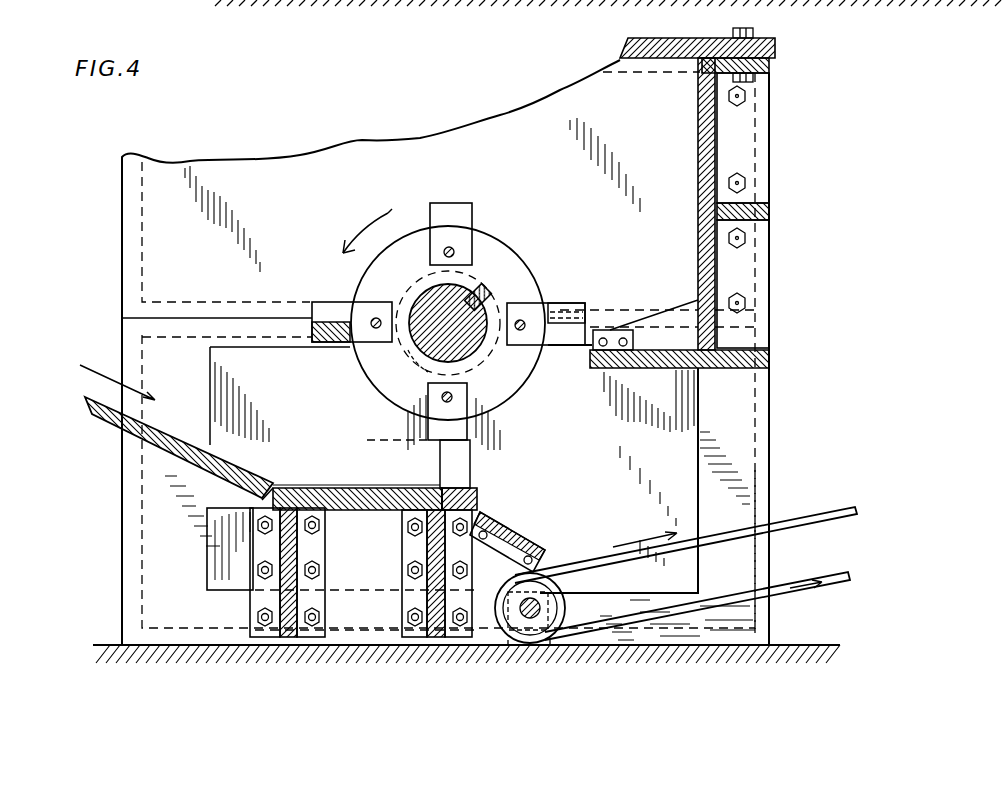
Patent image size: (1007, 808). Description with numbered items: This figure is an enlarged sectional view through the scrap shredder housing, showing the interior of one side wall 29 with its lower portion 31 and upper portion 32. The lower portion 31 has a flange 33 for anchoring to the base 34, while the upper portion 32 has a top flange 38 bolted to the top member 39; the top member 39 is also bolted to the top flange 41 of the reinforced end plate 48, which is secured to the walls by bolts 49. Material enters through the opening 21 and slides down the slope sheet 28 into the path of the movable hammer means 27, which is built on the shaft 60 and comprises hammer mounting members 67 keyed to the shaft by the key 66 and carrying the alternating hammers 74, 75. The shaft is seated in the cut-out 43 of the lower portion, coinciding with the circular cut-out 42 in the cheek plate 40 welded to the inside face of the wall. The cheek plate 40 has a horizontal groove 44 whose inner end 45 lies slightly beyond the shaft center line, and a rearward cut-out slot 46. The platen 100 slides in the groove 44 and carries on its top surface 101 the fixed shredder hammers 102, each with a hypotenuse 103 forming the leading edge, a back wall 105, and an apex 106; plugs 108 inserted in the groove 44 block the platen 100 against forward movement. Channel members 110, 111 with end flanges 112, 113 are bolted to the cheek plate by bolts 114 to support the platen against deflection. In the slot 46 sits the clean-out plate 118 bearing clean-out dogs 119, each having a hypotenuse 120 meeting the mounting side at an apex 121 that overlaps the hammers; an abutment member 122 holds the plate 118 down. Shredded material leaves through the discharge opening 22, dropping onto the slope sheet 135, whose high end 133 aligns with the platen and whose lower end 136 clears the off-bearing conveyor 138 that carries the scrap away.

The opening 21 is at (122, 322).
The discharge opening 22 is at (770, 388).
The movable hammer means 27 is at (517, 236).
The slope sheet 28 is at (110, 428).
The side wall 29 is at (735, 506).
The lower portion 31 is at (740, 562).
The upper portion 32 is at (655, 85).
The flange 33 is at (690, 644).
The base 34 is at (800, 652).
The top flange 38 is at (640, 70).
The top member 39 is at (626, 50).
The cheek plate 40 is at (680, 420).
The top flange 41 is at (775, 66).
The circular cut-out 42 is at (425, 357).
The cut-out 43 is at (430, 368).
The groove 44 is at (262, 505).
The inner end 45 is at (478, 500).
The cut-out slot 46 is at (625, 368).
The end plate 48 is at (718, 153).
The bolts 49 is at (745, 240).
The shaft 60 is at (430, 292).
The key 66 is at (490, 288).
The hammer mounting member 67 is at (535, 300).
The hammer 74 is at (572, 295).
The hammer 75 is at (470, 212).
The platen 100 is at (390, 508).
The top surface 101 is at (298, 484).
The fixed shredder hammer 102 is at (395, 478).
The hypotenuse 103 is at (426, 440).
The back wall 105 is at (472, 460).
The apex 106 is at (470, 432).
The plug 108 is at (478, 490).
The channel member 110 is at (288, 637).
The channel member 111 is at (437, 637).
The end flange 112 is at (252, 603).
The end flange 113 is at (322, 584).
The bolts 114 is at (318, 570).
The clean-out plate 118 is at (660, 372).
The clean-out dog 119 is at (655, 318).
The hypotenuse 120 is at (700, 305).
The apex 121 is at (570, 348).
The abutment member 122 is at (612, 328).
The high end 133 is at (510, 512).
The slope sheet 135 is at (510, 538).
The lower end 136 is at (610, 549).
The off-bearing conveyor 138 is at (697, 606).